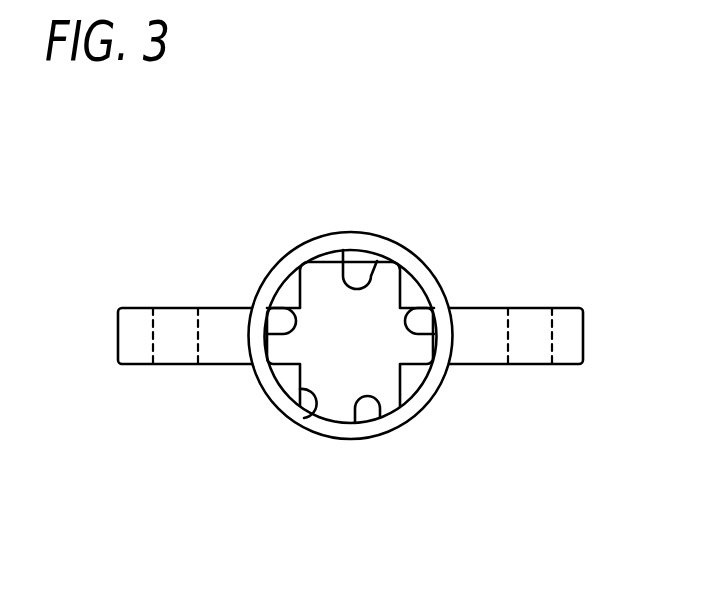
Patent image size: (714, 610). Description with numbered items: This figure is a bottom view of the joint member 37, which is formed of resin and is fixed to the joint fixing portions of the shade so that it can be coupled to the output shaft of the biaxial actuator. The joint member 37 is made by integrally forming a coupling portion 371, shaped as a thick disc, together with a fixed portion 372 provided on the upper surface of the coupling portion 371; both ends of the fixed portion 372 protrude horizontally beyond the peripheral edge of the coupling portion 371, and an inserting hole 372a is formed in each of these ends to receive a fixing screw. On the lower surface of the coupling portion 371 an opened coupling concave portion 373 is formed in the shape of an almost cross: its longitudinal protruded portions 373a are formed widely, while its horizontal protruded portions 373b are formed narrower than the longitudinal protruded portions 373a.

The joint member 37 is at (389, 323).
The coupling portion 371 is at (413, 275).
The fixed portion 372 is at (350, 393).
The inserting hole 372a is at (153, 332).
The coupling concave portion 373 is at (328, 421).
The longitudinal protruded portion 373a is at (377, 261).
The horizontal protruded portion 373b is at (276, 308).